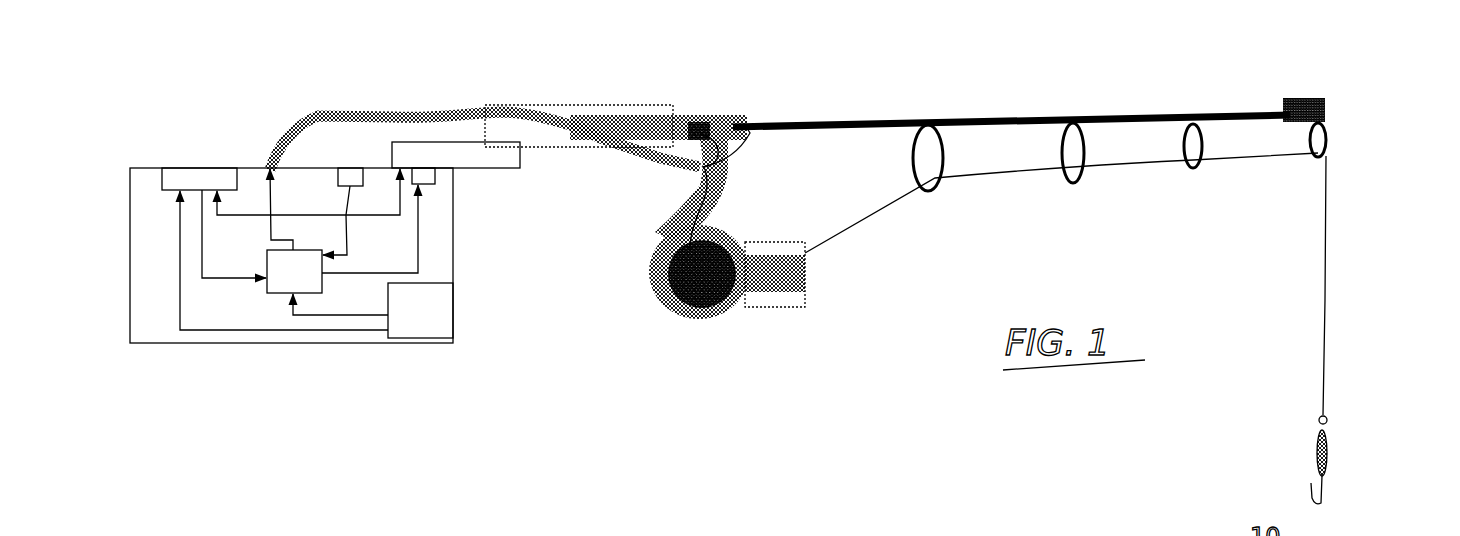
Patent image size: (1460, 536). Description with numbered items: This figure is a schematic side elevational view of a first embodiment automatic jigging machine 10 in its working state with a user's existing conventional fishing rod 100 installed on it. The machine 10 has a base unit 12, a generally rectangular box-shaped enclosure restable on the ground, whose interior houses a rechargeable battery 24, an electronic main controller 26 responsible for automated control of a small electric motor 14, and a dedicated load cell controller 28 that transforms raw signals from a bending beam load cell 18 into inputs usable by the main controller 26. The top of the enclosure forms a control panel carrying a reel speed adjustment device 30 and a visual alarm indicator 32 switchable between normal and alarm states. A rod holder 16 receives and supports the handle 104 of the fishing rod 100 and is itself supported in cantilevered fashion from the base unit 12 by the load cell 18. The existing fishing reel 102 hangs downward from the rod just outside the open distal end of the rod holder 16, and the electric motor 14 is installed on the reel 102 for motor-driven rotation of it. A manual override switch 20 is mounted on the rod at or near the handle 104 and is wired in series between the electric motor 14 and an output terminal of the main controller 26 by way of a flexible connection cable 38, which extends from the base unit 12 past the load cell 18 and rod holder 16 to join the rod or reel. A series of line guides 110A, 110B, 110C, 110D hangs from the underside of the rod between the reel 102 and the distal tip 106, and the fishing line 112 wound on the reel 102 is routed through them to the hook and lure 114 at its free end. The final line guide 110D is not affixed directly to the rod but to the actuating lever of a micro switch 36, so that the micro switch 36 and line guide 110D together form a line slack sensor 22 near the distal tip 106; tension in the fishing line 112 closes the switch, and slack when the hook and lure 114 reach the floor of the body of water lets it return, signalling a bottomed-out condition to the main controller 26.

The automatic jigging machine 10 is at (186, 124).
The base unit 12 is at (157, 327).
The electric motor 14 is at (708, 300).
The rod holder 16 is at (627, 105).
The bending beam load cell 18 is at (513, 158).
The manual override switch 20 is at (689, 152).
The line slack sensor 22 is at (1302, 93).
The rechargeable battery 24 is at (440, 330).
The electronic main controller 26 is at (312, 288).
The load cell controller 28 is at (198, 176).
The reel speed adjustment device 30 is at (350, 168).
The visual alarm indicator 32 is at (434, 179).
The micro switch 36 is at (1323, 103).
The flexible connection cable 38 is at (381, 119).
The fishing rod 100 is at (1087, 99).
The fishing reel 102 is at (654, 314).
The handle 104 is at (650, 121).
The distal tip 106 is at (1335, 113).
The line guide 110A is at (914, 160).
The line guide 110B is at (1076, 180).
The line guide 110C is at (1196, 170).
The final line guide 110D is at (1330, 148).
The fishing line 112 is at (1330, 303).
The hook and lure 114 is at (1337, 454).